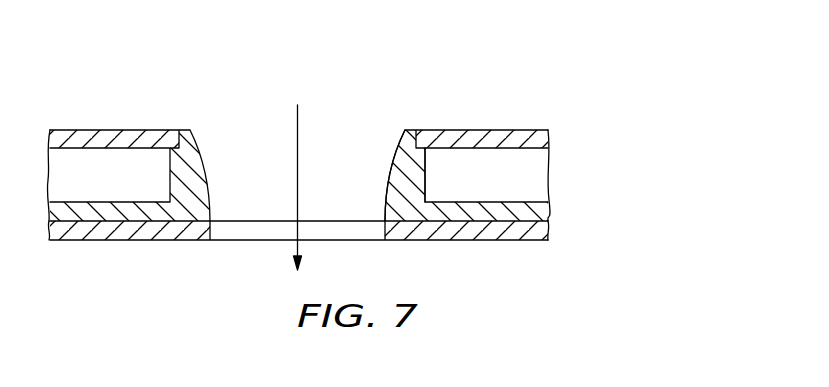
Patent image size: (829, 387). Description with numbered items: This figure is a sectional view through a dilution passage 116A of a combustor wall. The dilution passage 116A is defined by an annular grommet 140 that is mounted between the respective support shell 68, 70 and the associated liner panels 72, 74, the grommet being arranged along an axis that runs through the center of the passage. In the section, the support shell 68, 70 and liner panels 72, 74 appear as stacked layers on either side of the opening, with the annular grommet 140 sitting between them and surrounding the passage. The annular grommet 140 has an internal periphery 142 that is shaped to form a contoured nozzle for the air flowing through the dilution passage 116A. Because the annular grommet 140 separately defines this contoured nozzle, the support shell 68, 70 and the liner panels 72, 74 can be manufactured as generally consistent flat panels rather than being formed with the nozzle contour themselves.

The support shell 68 is at (355, 175).
The support shell 70 is at (548, 139).
The liner panel 72 is at (355, 240).
The liner panel 74 is at (548, 232).
The dilution passage 116A is at (257, 150).
The internal periphery 142 is at (391, 172).
The annular grommet 140 is at (425, 180).